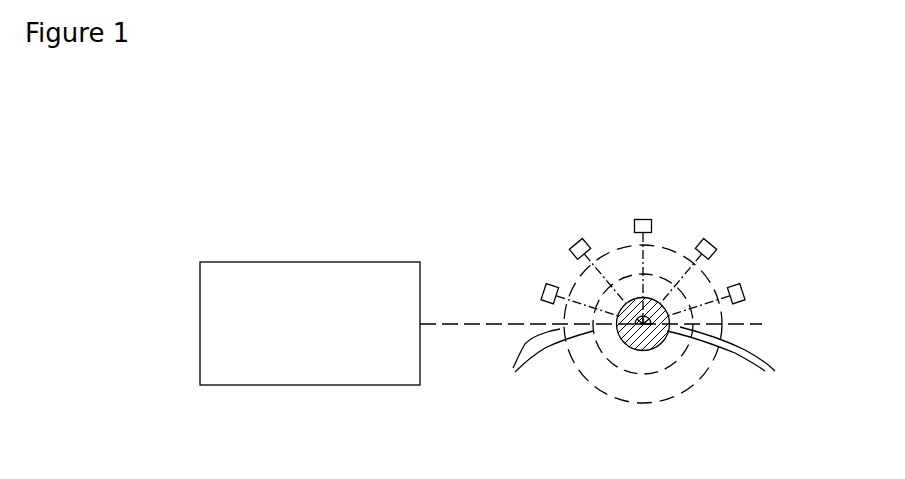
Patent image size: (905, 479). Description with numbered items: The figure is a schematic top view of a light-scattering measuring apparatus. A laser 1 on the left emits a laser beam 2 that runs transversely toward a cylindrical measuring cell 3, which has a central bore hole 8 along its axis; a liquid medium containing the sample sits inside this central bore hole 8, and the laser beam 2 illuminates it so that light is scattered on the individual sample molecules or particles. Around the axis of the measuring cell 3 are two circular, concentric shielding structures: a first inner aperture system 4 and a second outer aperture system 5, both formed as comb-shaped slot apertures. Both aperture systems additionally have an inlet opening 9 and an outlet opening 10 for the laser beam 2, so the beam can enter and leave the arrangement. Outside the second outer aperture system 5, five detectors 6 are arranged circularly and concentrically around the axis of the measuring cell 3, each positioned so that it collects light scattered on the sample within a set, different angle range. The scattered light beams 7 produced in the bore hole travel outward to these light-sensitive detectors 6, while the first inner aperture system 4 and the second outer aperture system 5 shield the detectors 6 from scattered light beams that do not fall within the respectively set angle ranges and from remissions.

The laser 1 is at (372, 288).
The laser beam 2 is at (476, 322).
The cylindrical measuring cell 3 is at (637, 298).
The first inner aperture system 4 is at (688, 346).
The second outer aperture system 5 is at (578, 360).
The detectors 6 is at (700, 242).
The scattered light beams 7 is at (693, 262).
The central bore hole 8 is at (649, 348).
The inlet opening 9 is at (544, 361).
The outlet opening 10 is at (739, 360).